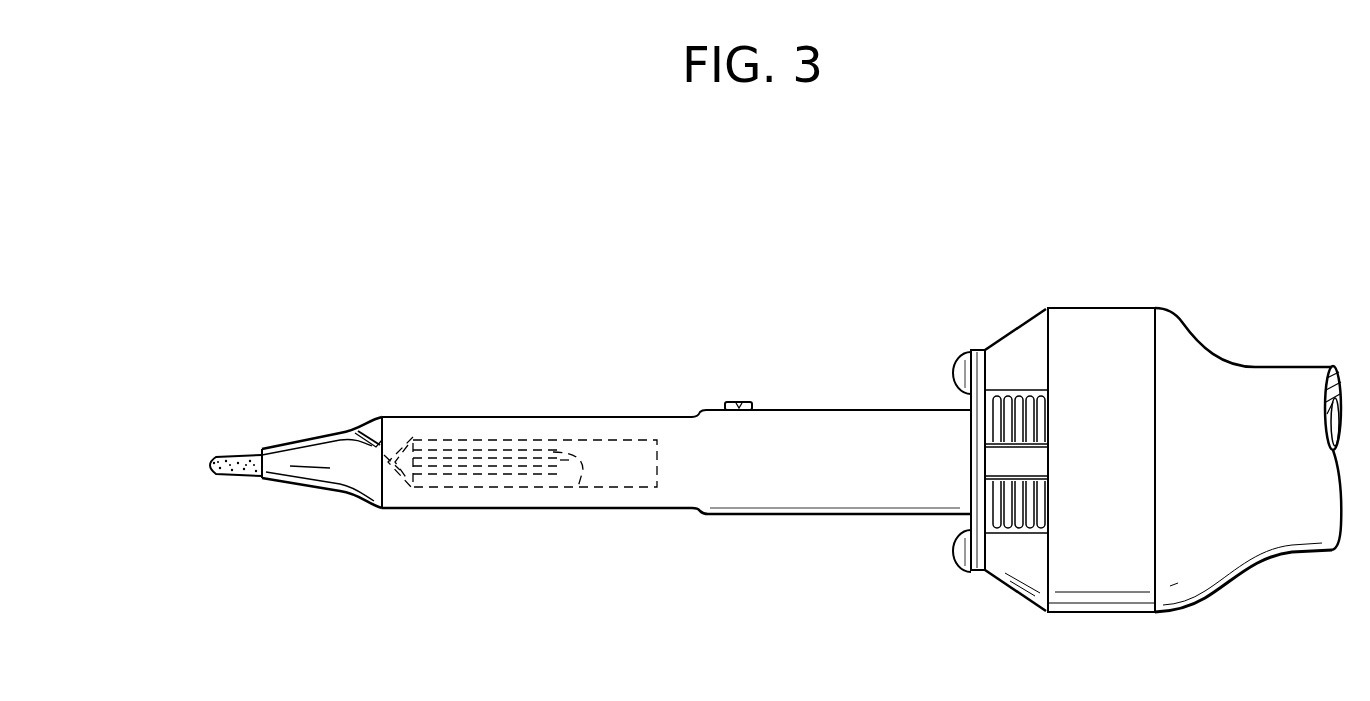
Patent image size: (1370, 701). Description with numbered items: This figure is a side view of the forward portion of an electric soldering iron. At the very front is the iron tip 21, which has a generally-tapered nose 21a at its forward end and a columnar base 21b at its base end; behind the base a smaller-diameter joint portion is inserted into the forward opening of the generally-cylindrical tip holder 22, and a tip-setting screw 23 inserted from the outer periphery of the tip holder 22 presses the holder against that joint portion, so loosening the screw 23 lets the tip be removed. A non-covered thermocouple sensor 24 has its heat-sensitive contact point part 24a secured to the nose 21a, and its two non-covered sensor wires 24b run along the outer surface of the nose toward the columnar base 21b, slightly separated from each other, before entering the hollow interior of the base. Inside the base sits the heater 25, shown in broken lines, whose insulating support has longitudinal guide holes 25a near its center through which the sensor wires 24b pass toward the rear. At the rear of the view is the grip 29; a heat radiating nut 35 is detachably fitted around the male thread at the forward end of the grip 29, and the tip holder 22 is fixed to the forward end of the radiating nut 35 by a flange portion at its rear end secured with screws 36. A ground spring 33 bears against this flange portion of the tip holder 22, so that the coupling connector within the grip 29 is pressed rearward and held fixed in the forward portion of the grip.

The iron tip 21 is at (430, 533).
The nose 21a is at (292, 470).
The columnar base 21b is at (640, 417).
The tip holder 22 is at (861, 422).
The tip-setting screw 23 is at (747, 402).
The non-covered thermocouple sensor 24 is at (309, 443).
The contact point part 24a is at (262, 453).
The sensor wires 24b is at (356, 432).
The heater 25 is at (662, 485).
The guide holes 25a is at (560, 489).
The grip 29 is at (1273, 388).
The ground spring 33 is at (1022, 525).
The heat radiating nut 35 is at (1103, 323).
The screws 36 is at (962, 562).